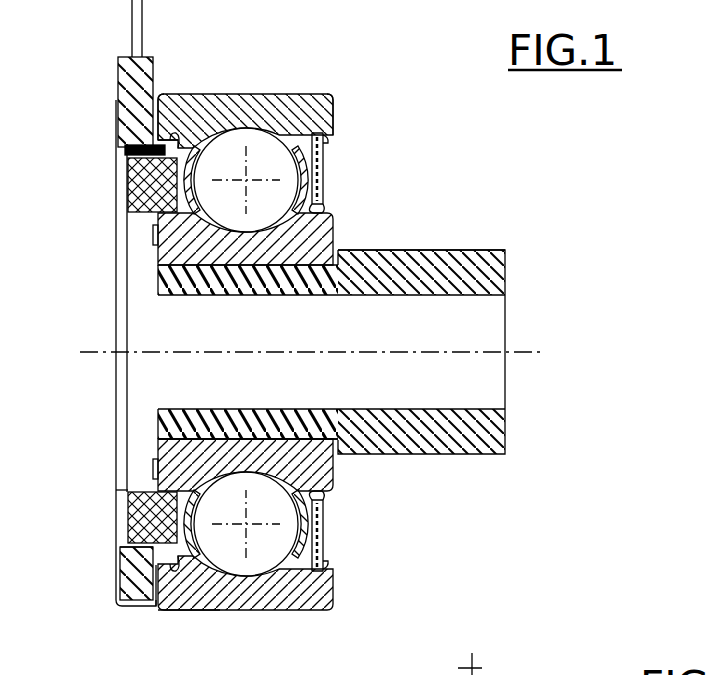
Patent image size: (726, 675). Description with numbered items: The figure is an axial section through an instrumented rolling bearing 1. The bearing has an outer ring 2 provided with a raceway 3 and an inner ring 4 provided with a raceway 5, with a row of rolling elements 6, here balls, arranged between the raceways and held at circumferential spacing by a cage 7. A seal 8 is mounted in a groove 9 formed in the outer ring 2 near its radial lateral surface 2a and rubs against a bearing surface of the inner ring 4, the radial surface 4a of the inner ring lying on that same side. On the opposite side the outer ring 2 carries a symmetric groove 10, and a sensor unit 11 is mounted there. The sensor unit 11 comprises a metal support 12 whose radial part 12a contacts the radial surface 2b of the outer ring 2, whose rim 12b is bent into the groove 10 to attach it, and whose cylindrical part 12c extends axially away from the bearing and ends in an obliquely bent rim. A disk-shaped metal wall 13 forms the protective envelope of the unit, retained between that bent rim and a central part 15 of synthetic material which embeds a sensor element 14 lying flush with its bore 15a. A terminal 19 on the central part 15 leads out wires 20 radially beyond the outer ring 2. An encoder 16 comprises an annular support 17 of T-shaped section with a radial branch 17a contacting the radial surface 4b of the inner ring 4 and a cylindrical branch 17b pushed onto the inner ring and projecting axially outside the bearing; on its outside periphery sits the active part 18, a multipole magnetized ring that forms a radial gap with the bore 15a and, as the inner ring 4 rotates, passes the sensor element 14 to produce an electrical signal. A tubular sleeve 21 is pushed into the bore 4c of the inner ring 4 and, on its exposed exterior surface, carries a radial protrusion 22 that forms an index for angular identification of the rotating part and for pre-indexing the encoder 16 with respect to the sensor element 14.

The rolling bearing 1 is at (340, 126).
The outer ring 2 is at (222, 104).
The radial lateral surface 2a is at (336, 106).
The radial surface 2b is at (157, 135).
The raceway 3 is at (232, 138).
The inner ring 4 is at (160, 255).
The radial surface 4a is at (334, 462).
The radial surface 4b is at (160, 445).
The bore 4c is at (160, 415).
The raceway 5 is at (128, 198).
The rolling elements 6 is at (258, 143).
The cage 7 is at (315, 143).
The seal 8 is at (325, 176).
The groove 9 is at (326, 140).
The groove 10 is at (172, 136).
The sensor unit 11 is at (116, 102).
The metal support 12 is at (116, 604).
The radial part 12a is at (176, 602).
The rim 12b is at (218, 612).
The cylindrical part 12c is at (146, 602).
The metal wall 13 is at (120, 522).
The sensor element 14 is at (126, 148).
The central part 15 is at (136, 580).
The bore 15a is at (130, 535).
The encoder 16 is at (154, 236).
The annular support 17 is at (145, 378).
The radial branch 17a is at (147, 474).
The cylindrical branch 17b is at (127, 330).
The active part 18 is at (121, 178).
The terminal 19 is at (130, 70).
The wires 20 is at (130, 3).
The sleeve 21 is at (402, 283).
The radial protrusion 22 is at (448, 253).